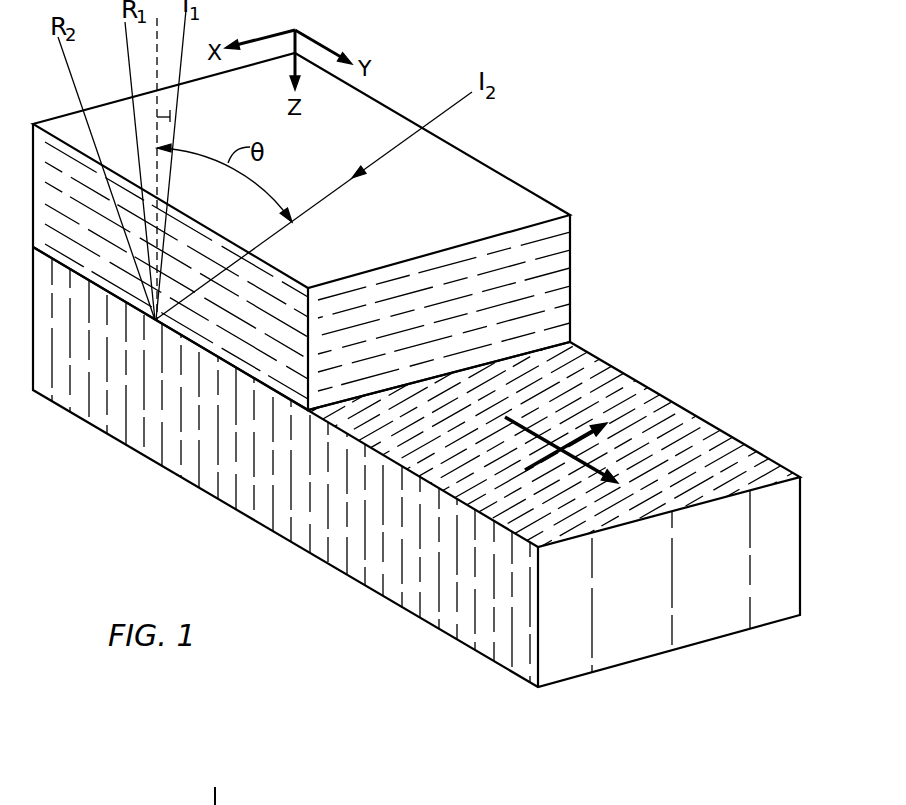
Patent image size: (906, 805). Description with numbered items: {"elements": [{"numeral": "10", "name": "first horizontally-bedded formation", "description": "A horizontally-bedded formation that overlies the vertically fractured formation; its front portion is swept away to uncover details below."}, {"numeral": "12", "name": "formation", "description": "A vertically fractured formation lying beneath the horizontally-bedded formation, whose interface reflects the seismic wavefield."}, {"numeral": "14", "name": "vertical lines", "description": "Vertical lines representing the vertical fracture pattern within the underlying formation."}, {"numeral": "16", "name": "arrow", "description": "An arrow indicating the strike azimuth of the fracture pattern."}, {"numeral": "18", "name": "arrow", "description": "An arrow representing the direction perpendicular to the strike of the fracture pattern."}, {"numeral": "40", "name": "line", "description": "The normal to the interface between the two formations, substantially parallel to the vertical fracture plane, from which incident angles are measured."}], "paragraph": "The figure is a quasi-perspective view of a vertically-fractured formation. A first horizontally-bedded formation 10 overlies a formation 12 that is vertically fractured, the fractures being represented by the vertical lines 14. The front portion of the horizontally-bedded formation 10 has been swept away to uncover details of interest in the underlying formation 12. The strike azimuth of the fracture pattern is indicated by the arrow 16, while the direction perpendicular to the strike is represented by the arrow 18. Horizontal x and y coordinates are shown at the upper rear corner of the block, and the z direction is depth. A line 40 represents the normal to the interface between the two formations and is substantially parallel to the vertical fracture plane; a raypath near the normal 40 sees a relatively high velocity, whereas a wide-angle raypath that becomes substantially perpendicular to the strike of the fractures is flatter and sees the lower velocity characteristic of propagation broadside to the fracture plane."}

The optical crystal block 10 is at (520, 199).
The substrate block 12 is at (703, 430).
The grain / polarization lines 14 is at (382, 575).
The first direction arrow 16 is at (578, 440).
The second direction arrow 18 is at (585, 467).
The angle between normal and reflected ray 40 is at (170, 117).